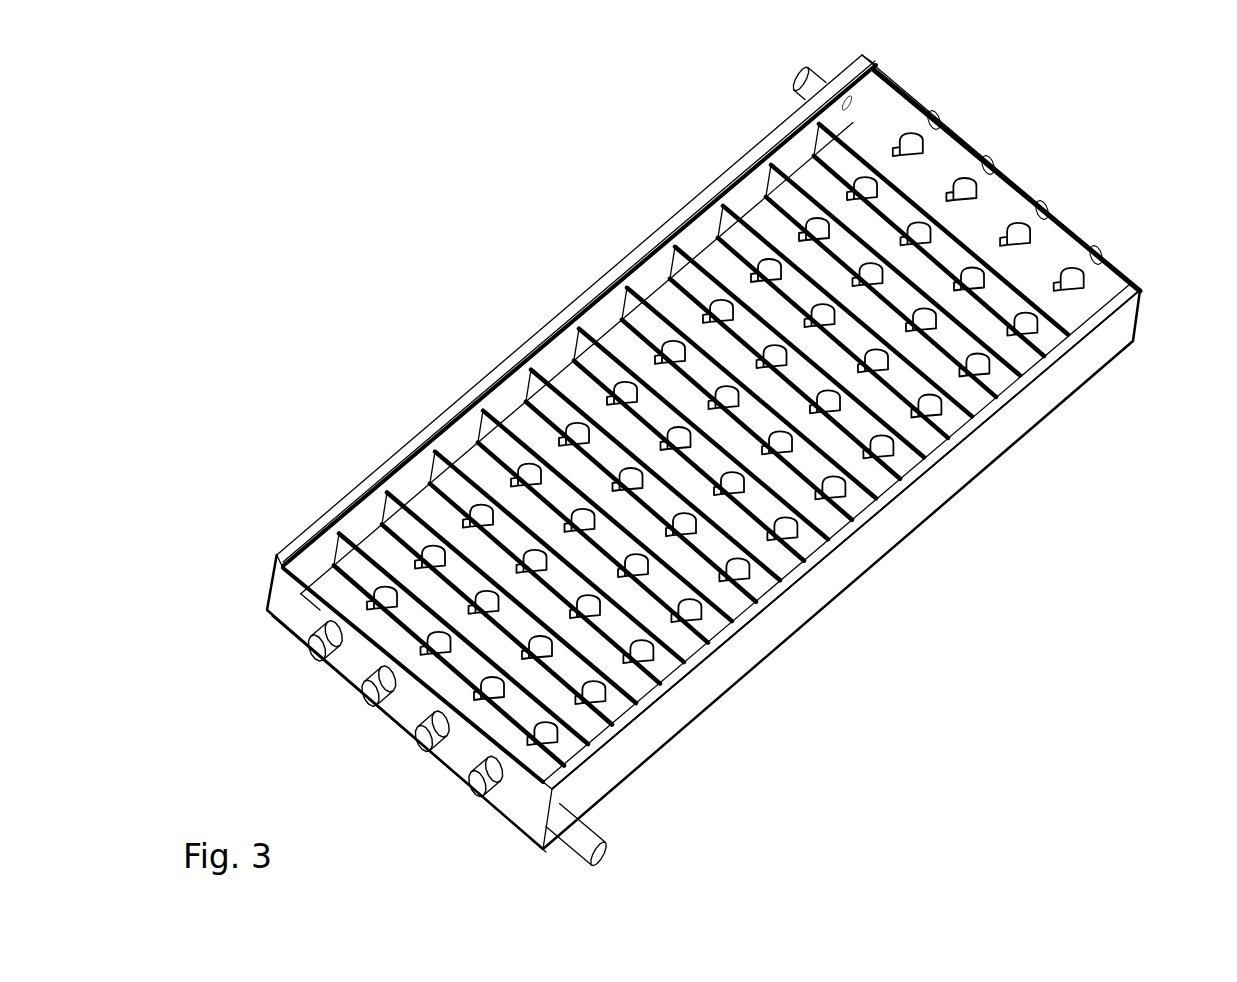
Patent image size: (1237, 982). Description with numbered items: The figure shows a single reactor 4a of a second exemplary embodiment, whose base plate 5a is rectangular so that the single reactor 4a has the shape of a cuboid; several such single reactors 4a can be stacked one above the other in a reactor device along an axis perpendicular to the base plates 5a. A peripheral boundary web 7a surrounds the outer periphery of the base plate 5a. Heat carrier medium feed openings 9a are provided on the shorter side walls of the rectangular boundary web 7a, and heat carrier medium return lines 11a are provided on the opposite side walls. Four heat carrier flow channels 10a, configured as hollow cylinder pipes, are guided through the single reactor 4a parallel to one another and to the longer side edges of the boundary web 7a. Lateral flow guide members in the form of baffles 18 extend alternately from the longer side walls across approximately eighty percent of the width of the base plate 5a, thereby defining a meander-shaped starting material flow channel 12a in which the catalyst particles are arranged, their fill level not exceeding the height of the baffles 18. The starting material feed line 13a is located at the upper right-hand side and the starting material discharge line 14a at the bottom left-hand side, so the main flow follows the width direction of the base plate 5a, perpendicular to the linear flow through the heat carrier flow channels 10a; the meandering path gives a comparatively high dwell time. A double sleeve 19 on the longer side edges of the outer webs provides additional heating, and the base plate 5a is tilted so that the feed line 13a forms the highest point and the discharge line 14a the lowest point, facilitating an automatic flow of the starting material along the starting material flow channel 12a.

The single reactor 4a is at (541, 301).
The base plate 5a is at (620, 708).
The peripheral boundary web 7a is at (312, 572).
The heat carrier medium feed openings 9a is at (938, 120).
The heat carrier flow channels 10a is at (897, 263).
The heat carrier medium return lines 11a is at (366, 701).
The starting material flow channel 12a is at (680, 268).
The starting material feed line 13a is at (796, 70).
The starting material discharge line 14a is at (603, 857).
The baffles 18 is at (727, 230).
The double sleeve 19 is at (474, 378).